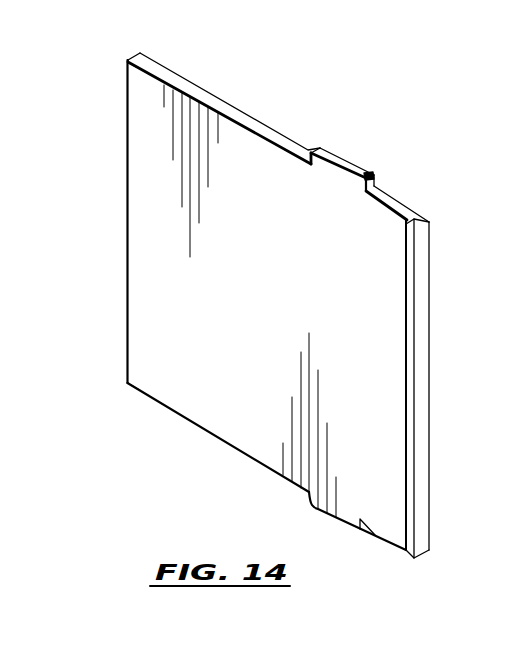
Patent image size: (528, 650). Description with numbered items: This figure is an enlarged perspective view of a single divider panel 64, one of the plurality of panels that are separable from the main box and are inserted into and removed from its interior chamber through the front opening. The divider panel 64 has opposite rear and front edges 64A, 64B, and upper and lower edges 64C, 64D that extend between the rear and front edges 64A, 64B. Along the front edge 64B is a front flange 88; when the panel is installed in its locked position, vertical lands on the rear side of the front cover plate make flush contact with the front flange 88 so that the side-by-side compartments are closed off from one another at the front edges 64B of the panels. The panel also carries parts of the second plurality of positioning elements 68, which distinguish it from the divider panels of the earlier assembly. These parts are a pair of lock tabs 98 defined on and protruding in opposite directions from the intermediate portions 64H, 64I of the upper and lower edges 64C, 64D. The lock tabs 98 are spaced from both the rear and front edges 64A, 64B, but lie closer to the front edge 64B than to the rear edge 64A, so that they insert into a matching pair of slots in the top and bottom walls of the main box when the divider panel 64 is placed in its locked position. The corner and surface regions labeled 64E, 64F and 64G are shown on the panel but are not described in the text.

The divider panel 64 is at (313, 133).
The rear edge 64A is at (126, 214).
The front edge 64B is at (427, 258).
The upper edge 64C is at (258, 130).
The lower edge 64D is at (217, 435).
The corners of panel 64E is at (138, 92).
The upper portion of panel 64F is at (145, 86).
The lower corner of panel 64G is at (152, 373).
The intermediate portion of the upper edge 64H is at (345, 214).
The intermediate portion of the lower edge 64I is at (336, 453).
The second plurality of positioning elements 68 is at (360, 148).
The front flange 88 is at (413, 348).
The lock tab 98 is at (373, 177).